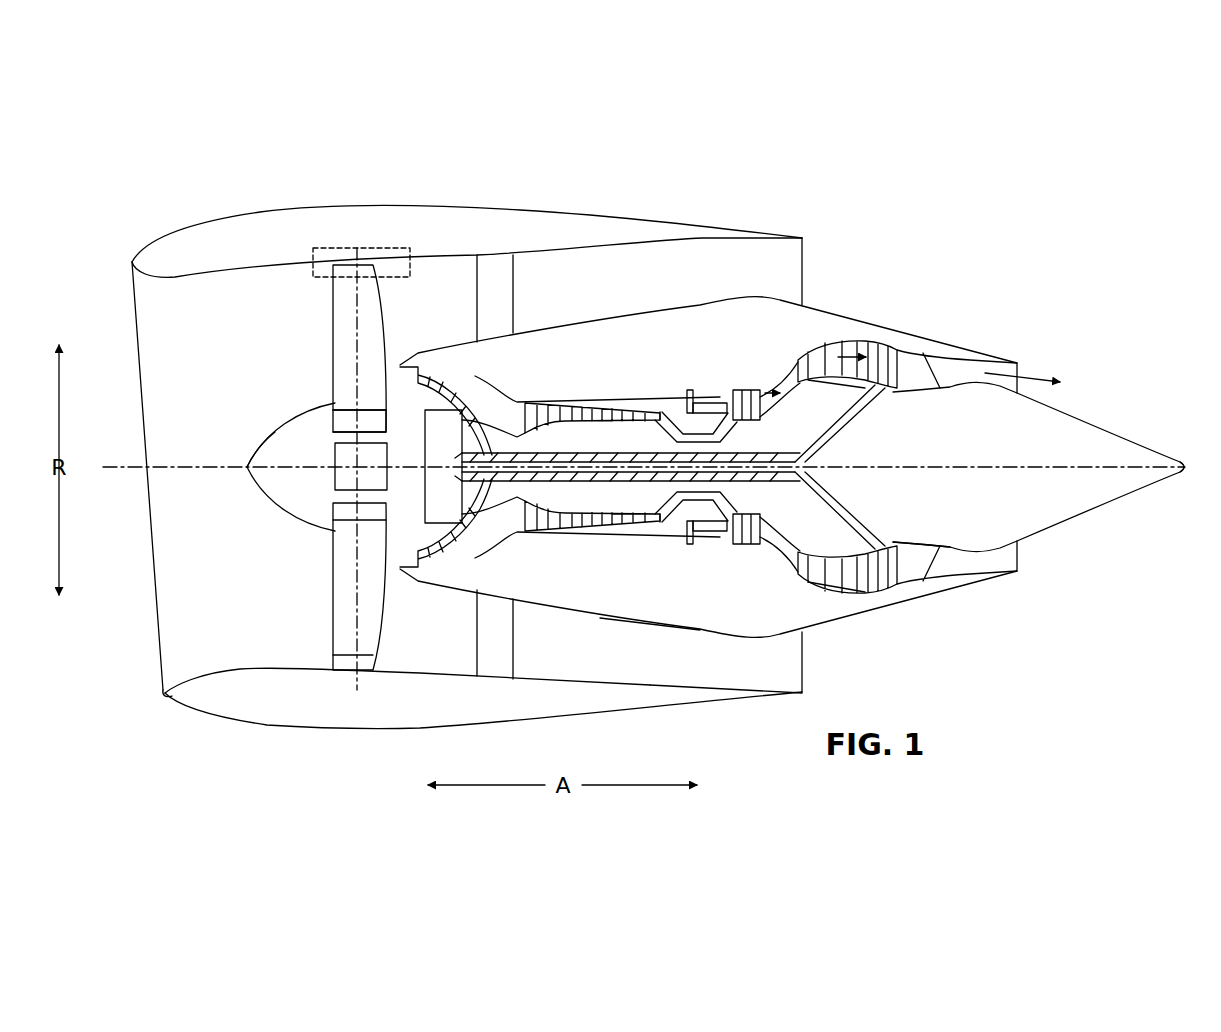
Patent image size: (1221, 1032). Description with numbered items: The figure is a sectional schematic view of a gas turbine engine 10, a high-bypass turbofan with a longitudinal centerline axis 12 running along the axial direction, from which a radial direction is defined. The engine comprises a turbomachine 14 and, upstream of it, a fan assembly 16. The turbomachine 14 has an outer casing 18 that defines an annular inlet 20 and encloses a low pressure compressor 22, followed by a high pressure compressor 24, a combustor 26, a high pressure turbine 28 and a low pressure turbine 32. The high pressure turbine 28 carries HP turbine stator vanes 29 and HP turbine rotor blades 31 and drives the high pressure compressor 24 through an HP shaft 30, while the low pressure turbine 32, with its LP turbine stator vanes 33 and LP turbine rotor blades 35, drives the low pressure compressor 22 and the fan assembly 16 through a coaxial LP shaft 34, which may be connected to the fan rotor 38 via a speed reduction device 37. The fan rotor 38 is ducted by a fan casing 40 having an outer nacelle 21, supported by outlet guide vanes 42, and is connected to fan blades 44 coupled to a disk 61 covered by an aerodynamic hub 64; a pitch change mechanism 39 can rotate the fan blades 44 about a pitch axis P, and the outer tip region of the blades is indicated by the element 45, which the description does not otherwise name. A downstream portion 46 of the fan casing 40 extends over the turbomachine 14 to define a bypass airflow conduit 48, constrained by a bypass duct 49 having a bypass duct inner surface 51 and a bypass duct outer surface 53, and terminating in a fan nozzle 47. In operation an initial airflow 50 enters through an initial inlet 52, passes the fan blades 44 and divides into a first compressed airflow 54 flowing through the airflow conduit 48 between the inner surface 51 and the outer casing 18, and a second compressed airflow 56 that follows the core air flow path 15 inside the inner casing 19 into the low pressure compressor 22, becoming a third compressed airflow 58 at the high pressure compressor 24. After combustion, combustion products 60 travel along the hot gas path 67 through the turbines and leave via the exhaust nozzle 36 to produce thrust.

The gas turbine engine 10 is at (942, 205).
The longitudinal or axial centerline axis 12 is at (990, 467).
The turbomachine 14 is at (620, 368).
The core air flow path 15 is at (497, 543).
The fan assembly 16 is at (250, 288).
The outer casing 18 is at (668, 625).
The inner casing 19 is at (1015, 563).
The annular inlet 20 is at (423, 570).
The outer nacelle 21 is at (335, 727).
The low pressure compressor 22 is at (458, 577).
The high pressure compressor 24 is at (543, 532).
The combustor 26 is at (700, 537).
The high pressure turbine 28 is at (770, 537).
The HP turbine stator vanes 29 is at (728, 545).
The high pressure shaft or spool 30 is at (745, 432).
The HP turbine rotor blades 31 is at (738, 535).
The low pressure turbine 32 is at (878, 595).
The LP turbine stator vanes 33 is at (812, 578).
The low pressure shaft or spool 34 is at (822, 425).
The LP turbine rotor blades 35 is at (817, 585).
The exhaust nozzle 36 is at (940, 572).
The speed reduction device 37 is at (458, 423).
The fan rotor 38 is at (290, 512).
The pitch change mechanism 39 is at (333, 459).
The fan casing 40 is at (358, 248).
The outlet guide vanes 42 is at (522, 284).
The fan blades 44 is at (330, 612).
The fan blade tip 45 is at (328, 665).
The downstream portion of the fan casing 46 is at (713, 225).
The fan nozzle 47 is at (793, 257).
The airflow conduit 48 is at (622, 290).
The bypass duct 49 is at (598, 678).
The initial airflow 50 is at (262, 325).
The bypass duct inner surface 51 is at (645, 690).
The initial inlet 52 is at (163, 675).
The bypass duct outer surface 53 is at (563, 690).
The first compressed airflow 54 is at (417, 293).
The second compressed airflow 56 is at (413, 367).
The third compressed airflow 58 is at (553, 418).
The combustion products 60 is at (747, 392).
The disk 61 is at (343, 424).
The hub 64 is at (260, 478).
The hot gas path 67 is at (790, 365).
The pitch axis / first circumferential direction P is at (355, 322).